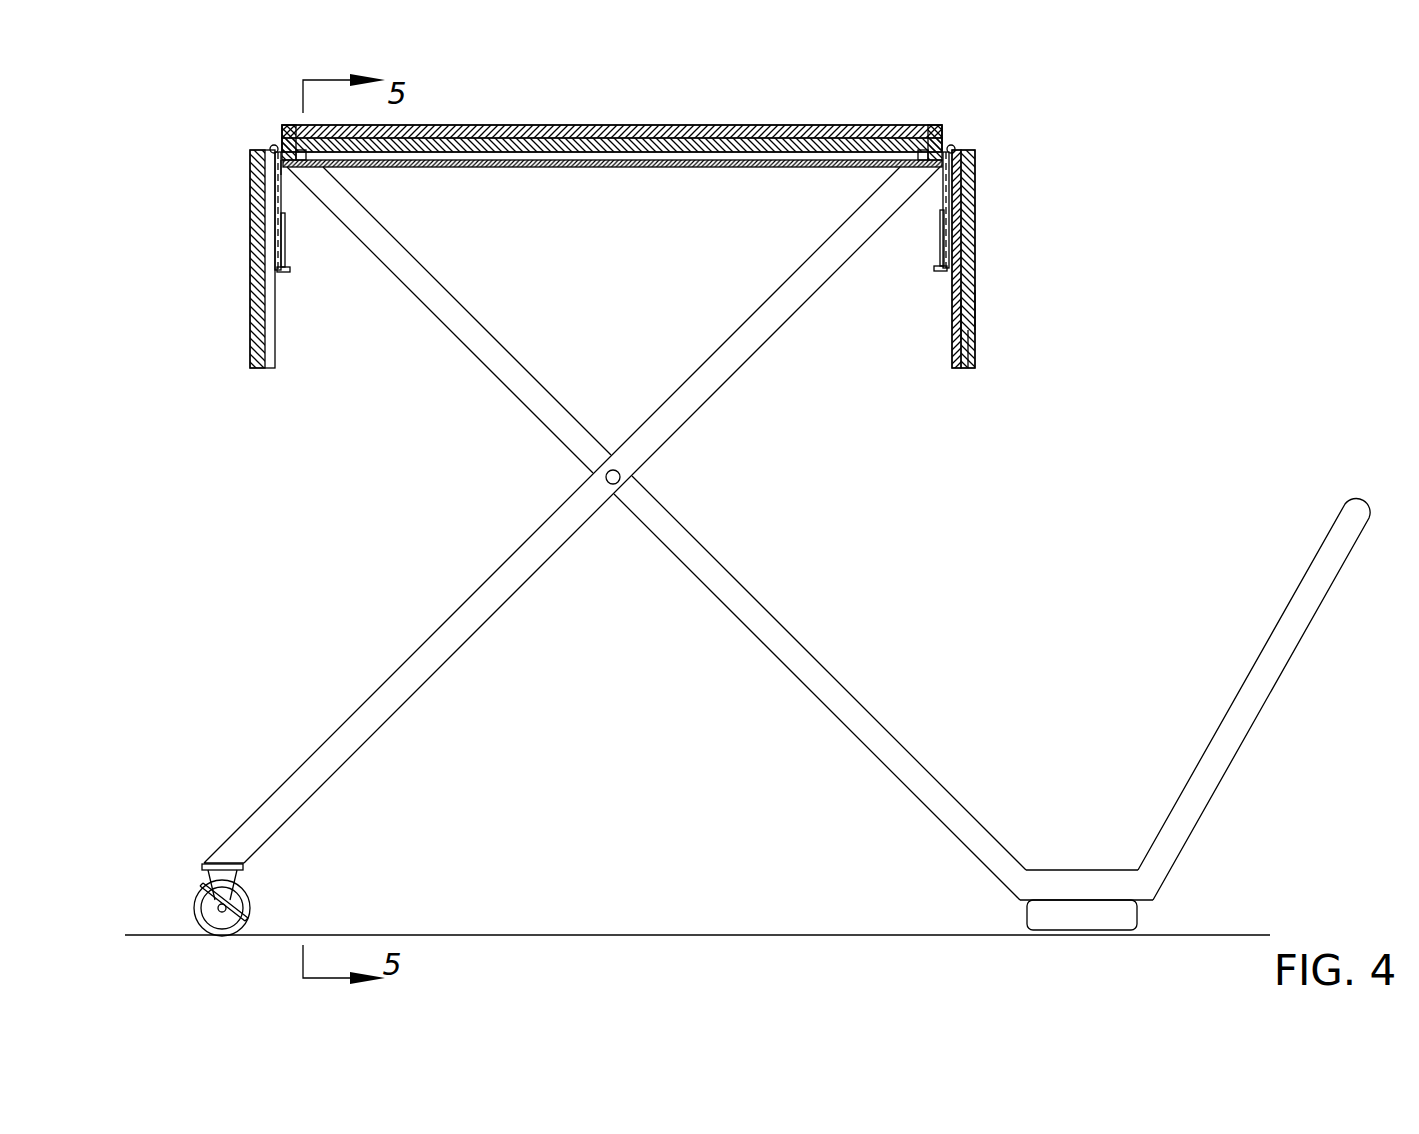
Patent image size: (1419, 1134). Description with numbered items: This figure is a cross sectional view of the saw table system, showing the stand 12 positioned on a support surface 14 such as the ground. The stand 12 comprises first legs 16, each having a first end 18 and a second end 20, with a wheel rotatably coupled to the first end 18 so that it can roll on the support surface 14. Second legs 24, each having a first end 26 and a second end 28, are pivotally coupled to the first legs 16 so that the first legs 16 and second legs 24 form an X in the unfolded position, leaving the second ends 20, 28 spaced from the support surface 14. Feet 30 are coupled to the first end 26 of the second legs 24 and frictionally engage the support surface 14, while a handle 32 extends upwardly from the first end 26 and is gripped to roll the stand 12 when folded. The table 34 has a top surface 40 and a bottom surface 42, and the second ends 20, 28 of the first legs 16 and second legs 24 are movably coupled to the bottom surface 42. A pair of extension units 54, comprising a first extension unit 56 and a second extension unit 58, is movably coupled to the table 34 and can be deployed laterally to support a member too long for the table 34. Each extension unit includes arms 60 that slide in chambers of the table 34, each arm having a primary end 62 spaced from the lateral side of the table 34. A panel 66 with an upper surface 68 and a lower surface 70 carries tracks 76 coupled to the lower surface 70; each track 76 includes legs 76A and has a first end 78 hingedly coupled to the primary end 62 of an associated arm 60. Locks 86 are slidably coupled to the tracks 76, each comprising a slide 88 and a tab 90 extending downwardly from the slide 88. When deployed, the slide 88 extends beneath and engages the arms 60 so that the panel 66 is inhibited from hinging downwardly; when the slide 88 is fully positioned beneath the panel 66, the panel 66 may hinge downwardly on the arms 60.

The stand 12 is at (902, 598).
The support surface 14 is at (552, 932).
The first legs 16 is at (410, 663).
The first end of first leg 18 is at (232, 920).
The second end of first leg 20 is at (940, 148).
The second legs 24 is at (770, 655).
The first end of second leg 26 is at (1027, 903).
The second end of second leg 28 is at (287, 135).
The feet 30 is at (1077, 932).
The handle 32 is at (1363, 500).
The table 34 is at (810, 128).
The top surface 40 is at (612, 110).
The bottom surface 42 is at (643, 167).
The extension units 54 is at (633, 298).
The first extension unit 56 is at (236, 242).
The second extension unit 58 is at (990, 231).
The arms 60 is at (567, 147).
The primary end 62 is at (274, 145).
The panel 66 is at (973, 330).
The upper surface 68 is at (975, 298).
The lower surface 70 is at (953, 320).
The tracks 76 is at (940, 203).
The legs of track 76A is at (942, 185).
The first end of track 78 is at (953, 147).
The locks 86 is at (288, 222).
The slide 88 is at (284, 232).
The tab 90 is at (291, 282).